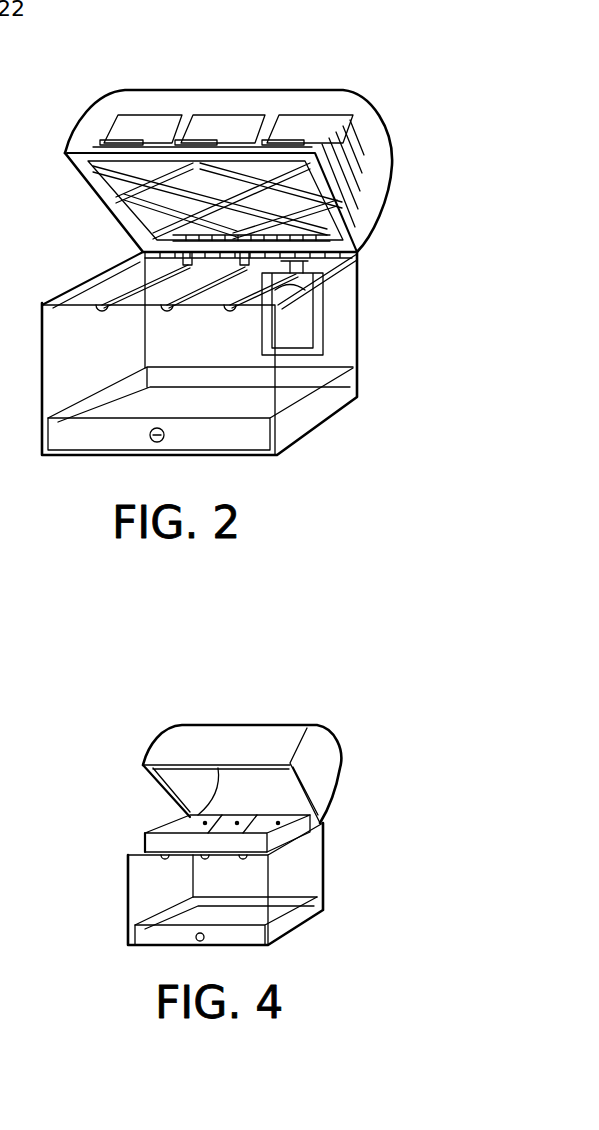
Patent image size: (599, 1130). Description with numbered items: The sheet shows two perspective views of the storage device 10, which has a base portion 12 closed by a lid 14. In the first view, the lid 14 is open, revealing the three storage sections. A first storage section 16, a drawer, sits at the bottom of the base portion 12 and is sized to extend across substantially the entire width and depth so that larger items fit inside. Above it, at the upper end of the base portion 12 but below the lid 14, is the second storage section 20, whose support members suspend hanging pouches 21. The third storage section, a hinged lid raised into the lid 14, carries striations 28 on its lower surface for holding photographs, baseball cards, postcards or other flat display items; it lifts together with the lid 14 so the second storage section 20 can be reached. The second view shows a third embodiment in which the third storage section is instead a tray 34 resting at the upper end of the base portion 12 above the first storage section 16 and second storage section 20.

In FIG. 4, the storage device 10 is at (323, 708).
In FIG. 4, the base portion 12 is at (320, 868).
In FIG. 2, the lid 14 is at (234, 90).
In FIG. 2, the first storage section 16 is at (343, 384).
In FIG. 4, the first storage section 16 is at (300, 918).
In FIG. 4, the second storage section 20 is at (150, 888).
In FIG. 2, the hanging pouches 21 is at (322, 318).
In FIG. 2, the striations 28 is at (130, 192).
In FIG. 4, the tray 34 is at (143, 838).